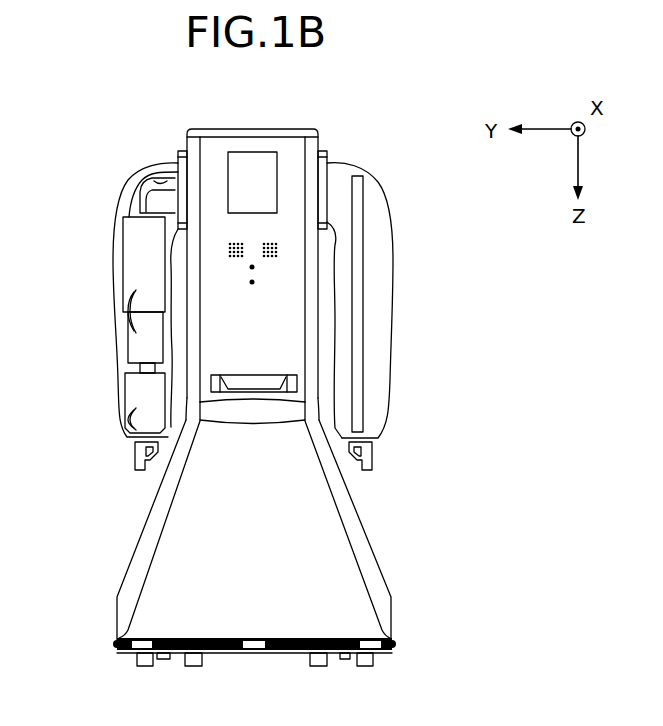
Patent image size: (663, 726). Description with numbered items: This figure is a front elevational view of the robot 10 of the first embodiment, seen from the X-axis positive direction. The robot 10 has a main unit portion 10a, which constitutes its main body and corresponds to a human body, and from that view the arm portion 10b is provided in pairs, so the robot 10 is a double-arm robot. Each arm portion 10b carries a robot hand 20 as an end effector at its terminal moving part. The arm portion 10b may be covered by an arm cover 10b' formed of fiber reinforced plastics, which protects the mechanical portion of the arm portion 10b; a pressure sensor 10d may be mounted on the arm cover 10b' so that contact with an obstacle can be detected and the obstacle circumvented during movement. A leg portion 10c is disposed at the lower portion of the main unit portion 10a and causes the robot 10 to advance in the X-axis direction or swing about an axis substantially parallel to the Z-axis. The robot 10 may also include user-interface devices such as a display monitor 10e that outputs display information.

The robot 10 is at (132, 138).
The main unit portion 10a is at (291, 129).
The arm portion 10b is at (110, 300).
The arm cover 10b' is at (398, 300).
The leg portion 10c is at (393, 644).
The pressure sensor 10d is at (365, 326).
The display monitor 10e is at (244, 151).
The robot hand 20 is at (135, 462).